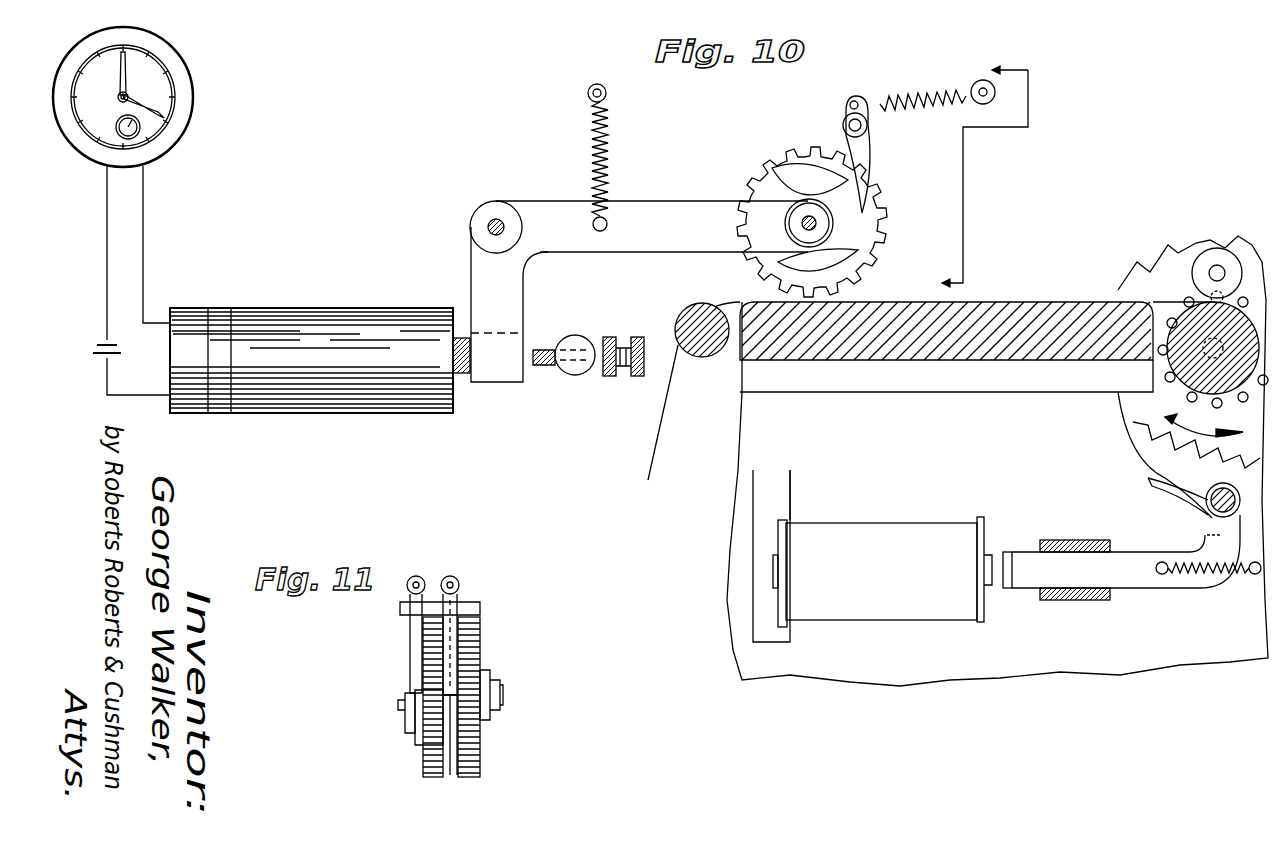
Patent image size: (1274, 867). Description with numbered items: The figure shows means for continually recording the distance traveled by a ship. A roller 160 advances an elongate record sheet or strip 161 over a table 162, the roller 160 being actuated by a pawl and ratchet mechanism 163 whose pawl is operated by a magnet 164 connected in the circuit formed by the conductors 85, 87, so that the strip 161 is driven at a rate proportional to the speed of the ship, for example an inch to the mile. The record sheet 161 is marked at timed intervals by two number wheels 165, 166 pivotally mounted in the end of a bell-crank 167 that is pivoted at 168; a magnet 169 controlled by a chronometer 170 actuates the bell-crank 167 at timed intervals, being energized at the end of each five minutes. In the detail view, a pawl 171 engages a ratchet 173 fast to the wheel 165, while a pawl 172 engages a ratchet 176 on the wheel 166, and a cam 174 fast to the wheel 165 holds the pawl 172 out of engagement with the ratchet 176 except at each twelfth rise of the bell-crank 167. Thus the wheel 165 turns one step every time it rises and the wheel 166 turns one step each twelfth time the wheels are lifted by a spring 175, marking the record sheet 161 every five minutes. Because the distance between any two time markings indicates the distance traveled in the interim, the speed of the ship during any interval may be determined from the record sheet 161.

In FIG. 10, the chronometer 170 is at (186, 117).
In FIG. 10, the magnet 169 is at (313, 308).
In FIG. 10, the pivot 168 is at (488, 223).
In FIG. 10, the bell-crank 167 is at (685, 180).
In FIG. 11, the bell-crank 167 is at (410, 680).
In FIG. 10, the spring 175 is at (607, 148).
In FIG. 10, the number wheel 165 is at (870, 235).
In FIG. 11, the number wheel 165 is at (425, 760).
In FIG. 10, the number wheel 166 is at (792, 172).
In FIG. 11, the number wheel 166 is at (480, 775).
In FIG. 10, the cam 174 is at (793, 174).
In FIG. 11, the cam 174 is at (446, 760).
In FIG. 10, the ratchet 173 is at (845, 254).
In FIG. 11, the ratchet 173 is at (418, 738).
In FIG. 10, the pawl 171 is at (866, 165).
In FIG. 11, the pawl 171 is at (415, 636).
In FIG. 11, the pawl 172 is at (455, 632).
In FIG. 11, the ratchet 176 is at (455, 760).
In FIG. 10, the record sheet 161 is at (652, 440).
In FIG. 10, the table 162 is at (975, 370).
In FIG. 10, the roller 160 is at (1190, 315).
In FIG. 10, the conductor 87 is at (752, 478).
In FIG. 10, the conductor 85 is at (790, 497).
In FIG. 10, the magnet 164 is at (895, 531).
In FIG. 10, the pawl and ratchet mechanism 163 is at (1108, 477).